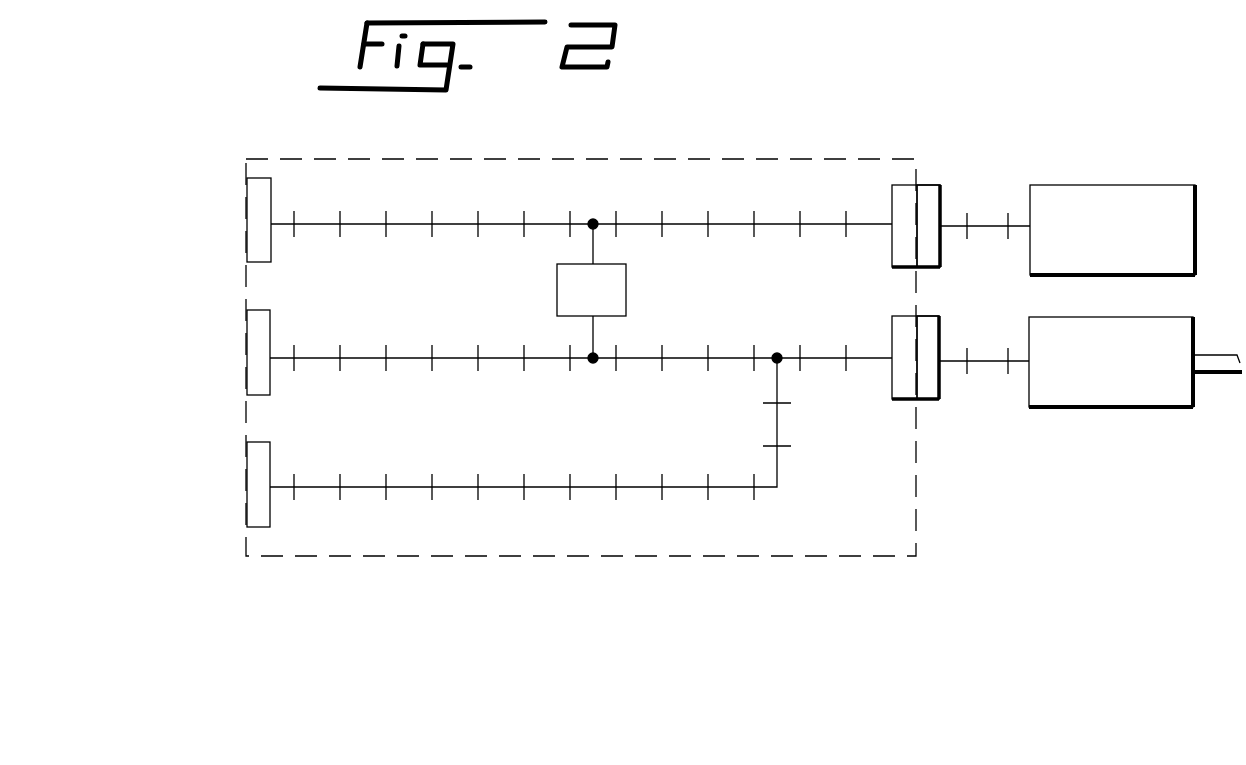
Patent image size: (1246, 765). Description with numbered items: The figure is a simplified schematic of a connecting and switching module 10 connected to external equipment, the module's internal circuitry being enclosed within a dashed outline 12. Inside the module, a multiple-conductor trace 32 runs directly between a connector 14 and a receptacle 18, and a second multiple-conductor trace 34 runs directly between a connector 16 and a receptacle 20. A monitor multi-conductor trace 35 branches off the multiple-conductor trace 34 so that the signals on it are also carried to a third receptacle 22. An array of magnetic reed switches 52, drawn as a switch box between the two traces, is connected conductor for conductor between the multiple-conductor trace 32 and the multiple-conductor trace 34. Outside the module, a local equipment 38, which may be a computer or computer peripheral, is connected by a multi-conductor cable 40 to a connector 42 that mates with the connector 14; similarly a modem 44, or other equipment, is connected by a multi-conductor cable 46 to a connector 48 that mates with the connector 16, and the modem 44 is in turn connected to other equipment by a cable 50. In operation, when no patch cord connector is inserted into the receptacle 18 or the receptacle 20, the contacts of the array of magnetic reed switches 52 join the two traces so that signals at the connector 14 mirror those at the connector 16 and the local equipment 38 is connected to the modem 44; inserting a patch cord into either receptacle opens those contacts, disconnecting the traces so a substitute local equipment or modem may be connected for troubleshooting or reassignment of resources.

The connecting and switching module 10 is at (752, 123).
The switching unit enclosure 12 is at (611, 174).
The connector 14 is at (905, 202).
The connector 16 is at (897, 387).
The receptacle 18 is at (256, 209).
The receptacle 20 is at (255, 343).
The receptacle 22 is at (255, 483).
The multiple-conductor trace 32 is at (827, 227).
The multiple-conductor trace 34 is at (825, 357).
The monitor multi-conductor trace 35 is at (440, 487).
The local equipment 38 is at (1123, 190).
The multi-conductor cable 40 is at (988, 230).
The connector 42 is at (928, 192).
The modem 44 is at (1105, 395).
The multi-conductor cable 46 is at (990, 362).
The connector 48 is at (924, 385).
The cable 50 is at (1220, 363).
The array of magnetic reed switches 52 is at (622, 287).